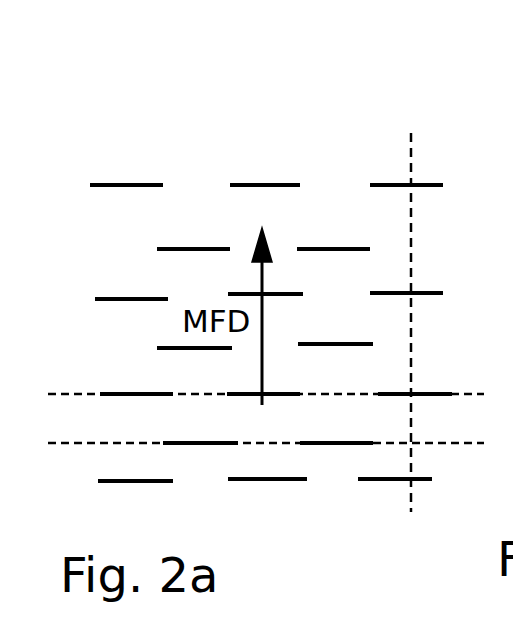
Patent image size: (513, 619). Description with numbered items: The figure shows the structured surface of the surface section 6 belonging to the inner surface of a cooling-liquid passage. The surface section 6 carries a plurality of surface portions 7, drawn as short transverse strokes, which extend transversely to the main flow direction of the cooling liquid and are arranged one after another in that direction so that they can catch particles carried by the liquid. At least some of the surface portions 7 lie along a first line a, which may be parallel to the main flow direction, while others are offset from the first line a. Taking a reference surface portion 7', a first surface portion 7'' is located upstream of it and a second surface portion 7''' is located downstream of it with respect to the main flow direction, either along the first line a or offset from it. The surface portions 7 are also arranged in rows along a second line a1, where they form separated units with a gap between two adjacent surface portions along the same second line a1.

The surface section 6 is at (325, 134).
The surface portions 7 is at (164, 280).
The reference surface portion 7' is at (431, 249).
The first surface portion 7'' is at (440, 360).
The second surface portion 7''' is at (431, 138).
The second line a1 is at (62, 443).
The first line a is at (427, 326).